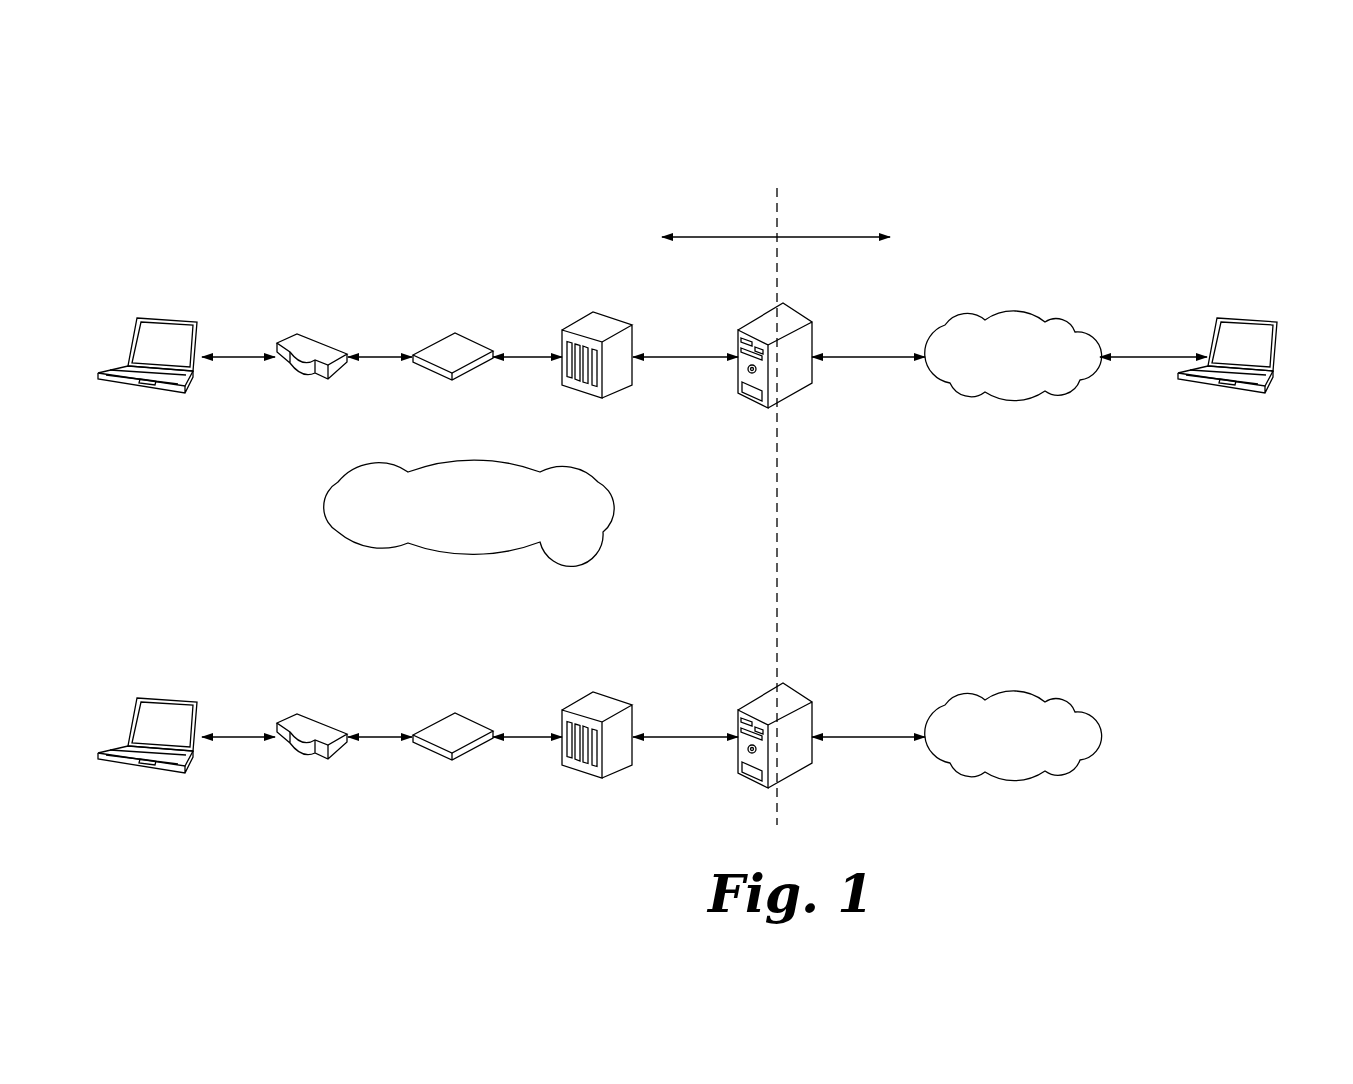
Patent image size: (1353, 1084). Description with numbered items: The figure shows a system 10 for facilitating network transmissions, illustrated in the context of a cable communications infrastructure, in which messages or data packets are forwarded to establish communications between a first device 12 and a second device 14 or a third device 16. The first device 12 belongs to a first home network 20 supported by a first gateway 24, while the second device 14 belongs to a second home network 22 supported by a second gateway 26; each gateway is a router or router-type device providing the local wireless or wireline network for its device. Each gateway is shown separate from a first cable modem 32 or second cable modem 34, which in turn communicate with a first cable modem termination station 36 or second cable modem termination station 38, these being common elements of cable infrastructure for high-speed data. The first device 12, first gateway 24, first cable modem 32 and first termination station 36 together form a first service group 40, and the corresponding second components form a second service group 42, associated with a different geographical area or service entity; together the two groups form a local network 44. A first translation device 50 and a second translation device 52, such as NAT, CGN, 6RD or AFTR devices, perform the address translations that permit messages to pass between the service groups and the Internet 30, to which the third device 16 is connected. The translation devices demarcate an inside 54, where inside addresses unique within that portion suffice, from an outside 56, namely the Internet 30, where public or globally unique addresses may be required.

The system 10 is at (1124, 182).
The first device 12 is at (170, 318).
The second device 14 is at (147, 711).
The third device 16 is at (1245, 331).
The first home network 20 is at (250, 360).
The second home network 22 is at (236, 762).
The first gateway 24 is at (317, 340).
The second gateway 26 is at (305, 715).
The Internet 30 is at (1013, 310).
The first cable modem 32 is at (463, 332).
The second cable modem 34 is at (450, 713).
The first cable modem termination station 36 is at (603, 312).
The second cable modem termination station 38 is at (590, 710).
The first service group 40 is at (522, 229).
The second service group 42 is at (522, 619).
The local network 44 is at (470, 463).
The first translation device 50 is at (795, 307).
The second translation device 52 is at (795, 713).
The inside 54 is at (687, 240).
The outside 56 is at (867, 238).